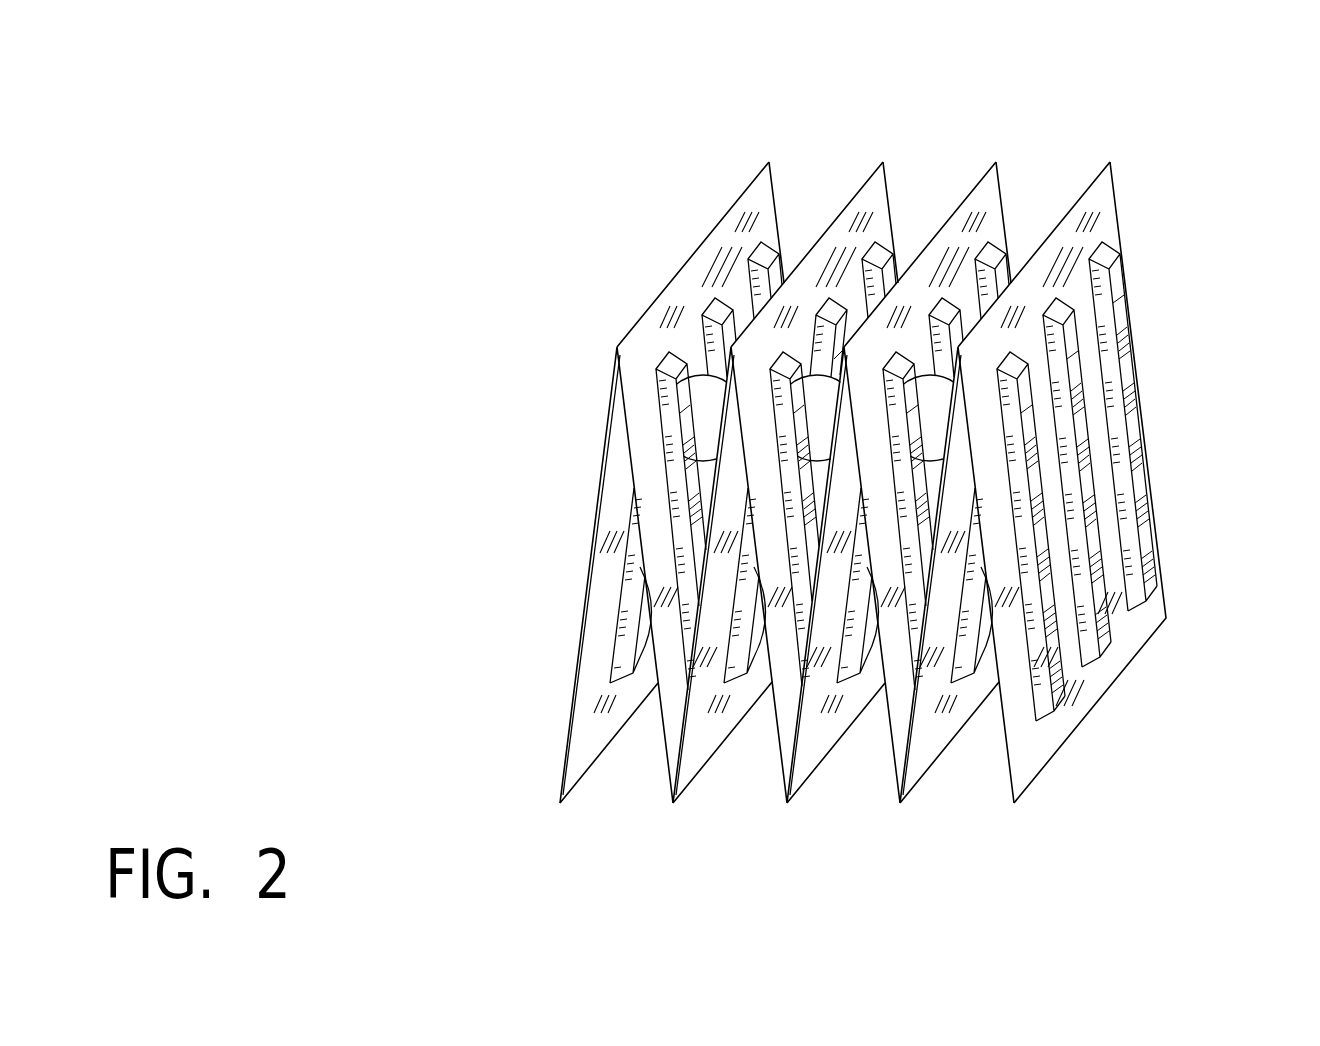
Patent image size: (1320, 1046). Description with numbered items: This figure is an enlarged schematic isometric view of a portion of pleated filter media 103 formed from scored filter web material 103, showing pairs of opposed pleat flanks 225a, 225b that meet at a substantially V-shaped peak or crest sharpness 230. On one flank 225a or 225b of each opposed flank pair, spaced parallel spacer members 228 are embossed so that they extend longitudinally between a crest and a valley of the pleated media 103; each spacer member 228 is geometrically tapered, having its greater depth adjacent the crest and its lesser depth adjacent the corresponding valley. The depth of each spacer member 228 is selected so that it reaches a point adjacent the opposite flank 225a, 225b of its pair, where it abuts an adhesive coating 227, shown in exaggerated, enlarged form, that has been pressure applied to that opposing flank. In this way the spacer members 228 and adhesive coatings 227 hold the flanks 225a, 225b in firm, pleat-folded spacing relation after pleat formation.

The scored filter web material 103 is at (901, 127).
The flank 225a is at (593, 660).
The flank 225b is at (672, 700).
The adhesive coating application 227 is at (818, 400).
The spacer member 228 is at (1122, 301).
The peak or crest sharpness 230 is at (683, 270).